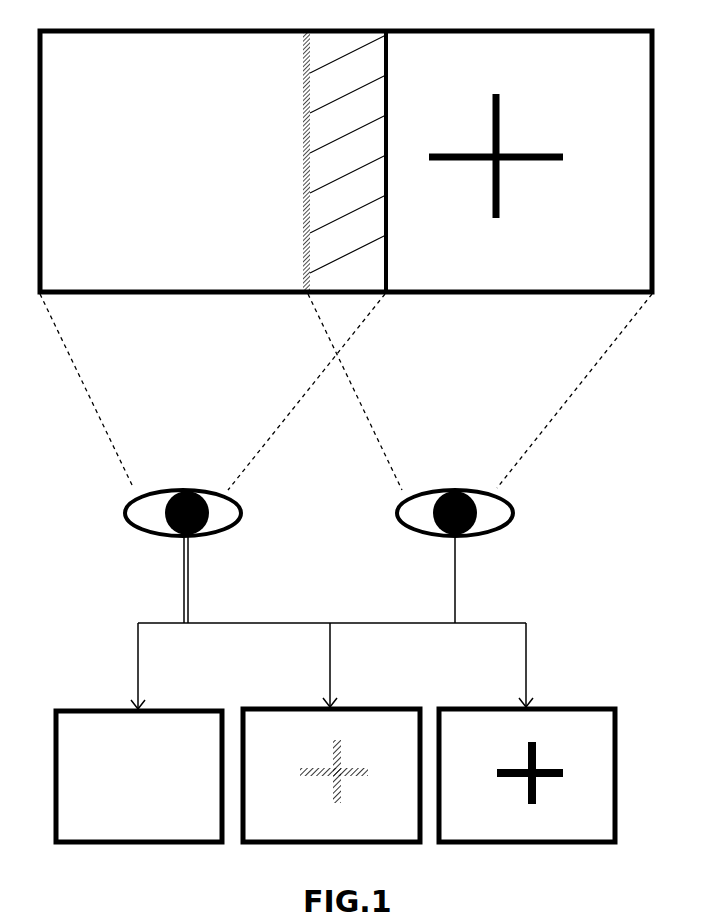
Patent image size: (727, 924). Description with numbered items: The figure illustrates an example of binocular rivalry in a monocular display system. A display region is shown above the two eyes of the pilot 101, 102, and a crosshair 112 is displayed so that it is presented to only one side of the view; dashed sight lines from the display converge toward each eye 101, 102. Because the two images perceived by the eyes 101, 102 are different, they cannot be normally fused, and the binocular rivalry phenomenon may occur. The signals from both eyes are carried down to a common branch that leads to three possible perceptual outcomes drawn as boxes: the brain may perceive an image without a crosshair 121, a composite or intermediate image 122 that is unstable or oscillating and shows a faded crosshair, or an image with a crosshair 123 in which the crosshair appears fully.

The crosshair 112 is at (527, 138).
The eye of the pilot 101 is at (178, 487).
The eye of the pilot 102 is at (447, 487).
The image without a crosshair 121 is at (167, 705).
The composite or intermediate image 122 is at (360, 707).
The image with a crosshair 123 is at (557, 707).